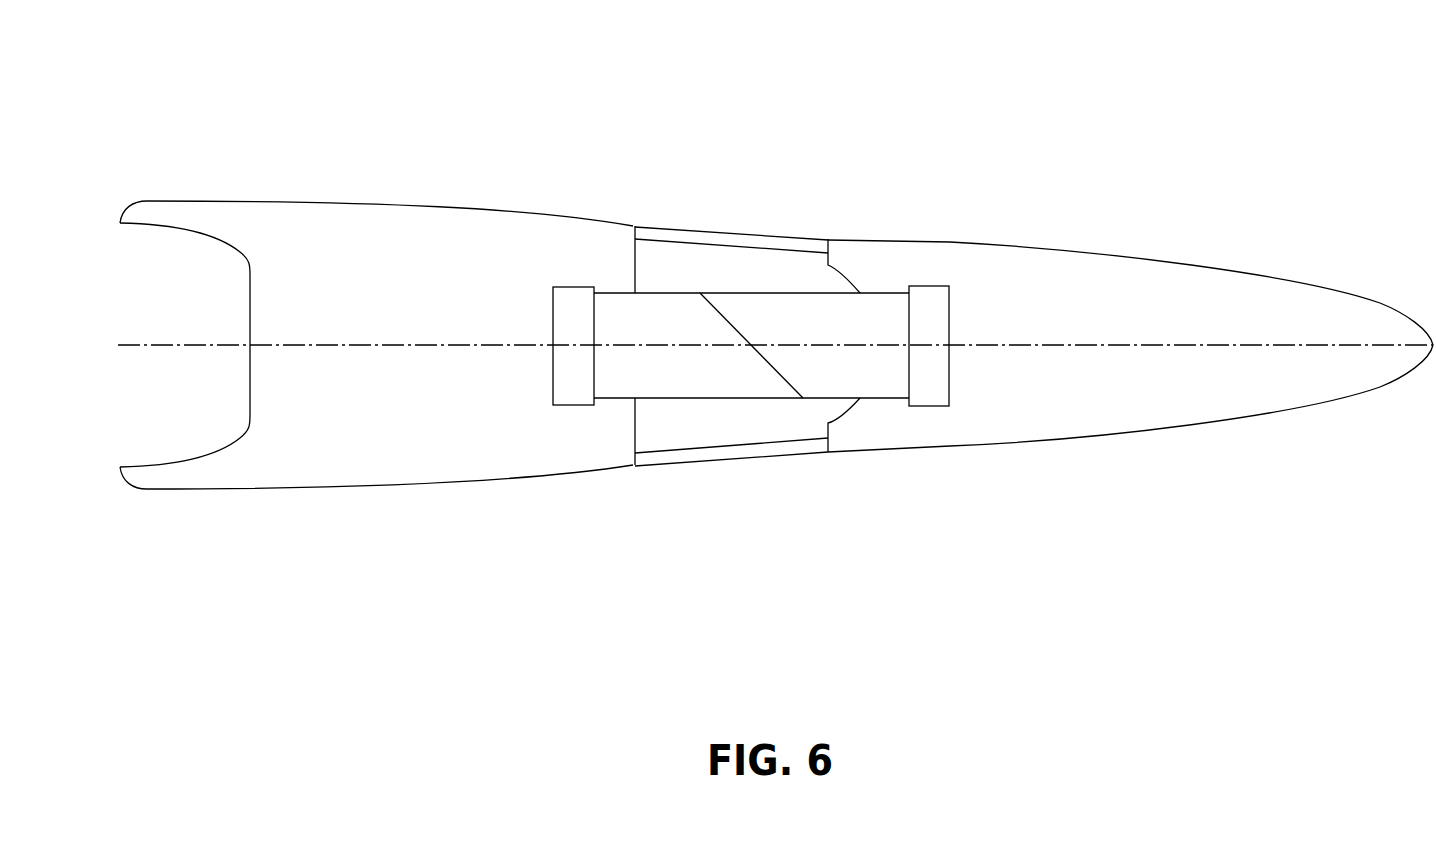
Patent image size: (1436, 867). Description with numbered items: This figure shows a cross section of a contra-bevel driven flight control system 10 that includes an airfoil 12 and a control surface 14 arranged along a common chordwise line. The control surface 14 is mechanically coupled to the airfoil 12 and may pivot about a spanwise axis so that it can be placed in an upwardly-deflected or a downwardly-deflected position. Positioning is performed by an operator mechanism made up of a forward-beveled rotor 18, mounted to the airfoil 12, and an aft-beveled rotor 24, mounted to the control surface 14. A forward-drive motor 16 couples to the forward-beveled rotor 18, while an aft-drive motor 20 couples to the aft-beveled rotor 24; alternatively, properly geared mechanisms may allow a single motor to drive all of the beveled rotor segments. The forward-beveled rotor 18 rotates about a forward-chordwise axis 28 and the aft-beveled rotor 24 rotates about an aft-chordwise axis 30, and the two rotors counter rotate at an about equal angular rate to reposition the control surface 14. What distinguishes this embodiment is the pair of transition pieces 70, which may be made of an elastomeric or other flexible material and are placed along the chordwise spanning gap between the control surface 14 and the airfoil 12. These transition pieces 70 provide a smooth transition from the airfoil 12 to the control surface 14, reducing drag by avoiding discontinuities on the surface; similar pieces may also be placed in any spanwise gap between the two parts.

The contra-bevel driven flight control system 10 is at (522, 110).
The airfoil 12 is at (377, 345).
The control surface 14 is at (1130, 345).
The forward-drive motor 16 is at (553, 295).
The forward-beveled rotor 18 is at (751, 345).
The aft-drive motor 20 is at (928, 286).
The aft-beveled rotor 24 is at (758, 345).
The forward-chordwise axis 28 is at (190, 345).
The aft-chordwise axis 30 is at (1343, 345).
The transition pieces 70 is at (688, 232).